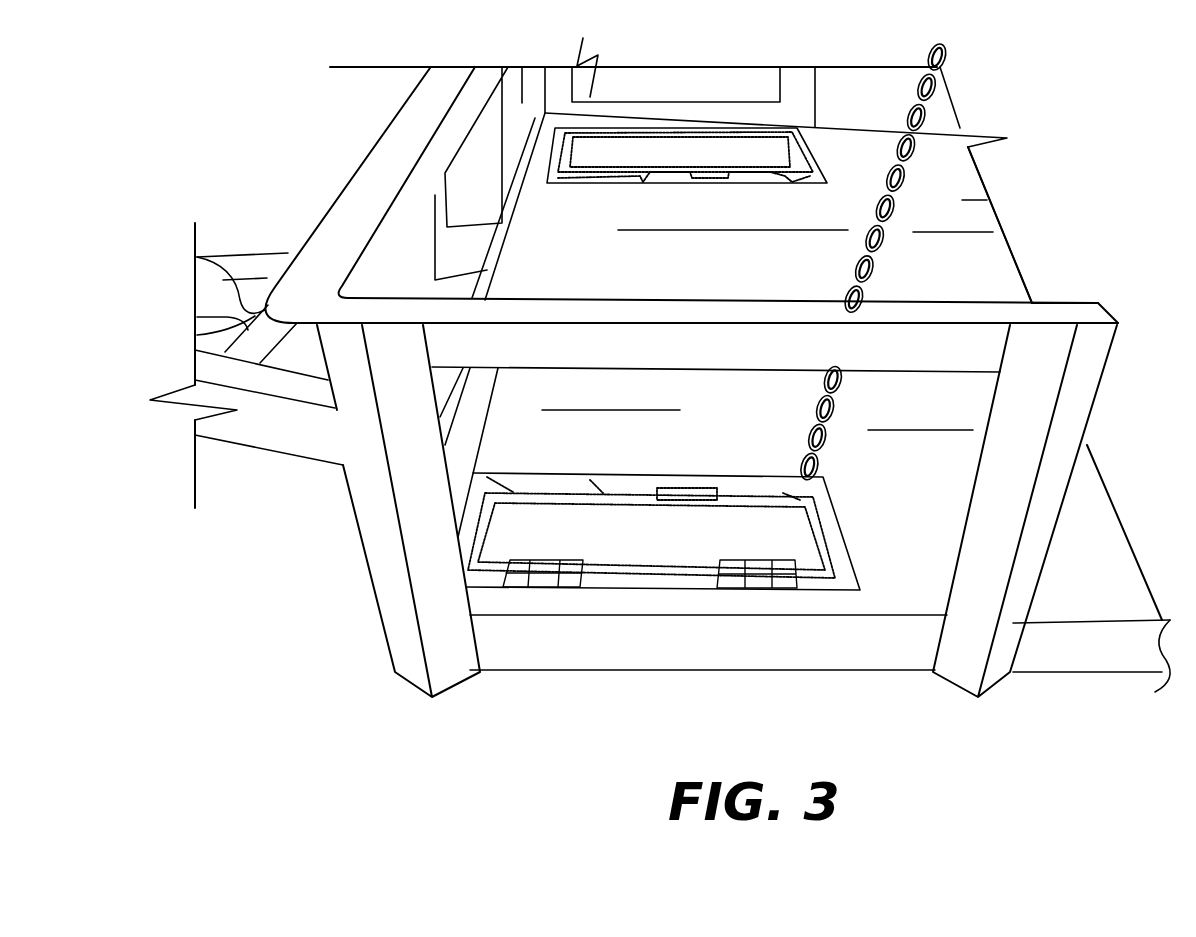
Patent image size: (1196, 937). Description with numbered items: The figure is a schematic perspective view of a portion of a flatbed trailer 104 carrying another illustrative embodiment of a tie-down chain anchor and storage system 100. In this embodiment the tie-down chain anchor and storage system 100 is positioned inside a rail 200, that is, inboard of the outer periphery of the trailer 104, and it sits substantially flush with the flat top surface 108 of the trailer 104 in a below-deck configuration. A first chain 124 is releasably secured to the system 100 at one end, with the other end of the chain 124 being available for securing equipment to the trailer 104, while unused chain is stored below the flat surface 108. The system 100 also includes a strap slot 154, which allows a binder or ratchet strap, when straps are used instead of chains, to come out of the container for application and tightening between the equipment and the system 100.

The tie-down chain anchor and storage system 100 is at (645, 158).
The flatbed trailer 104 is at (1125, 572).
The flat top surface 108 is at (1083, 530).
The first chain 124 is at (900, 212).
The strap slot 154 is at (680, 490).
The rail 200 is at (634, 367).